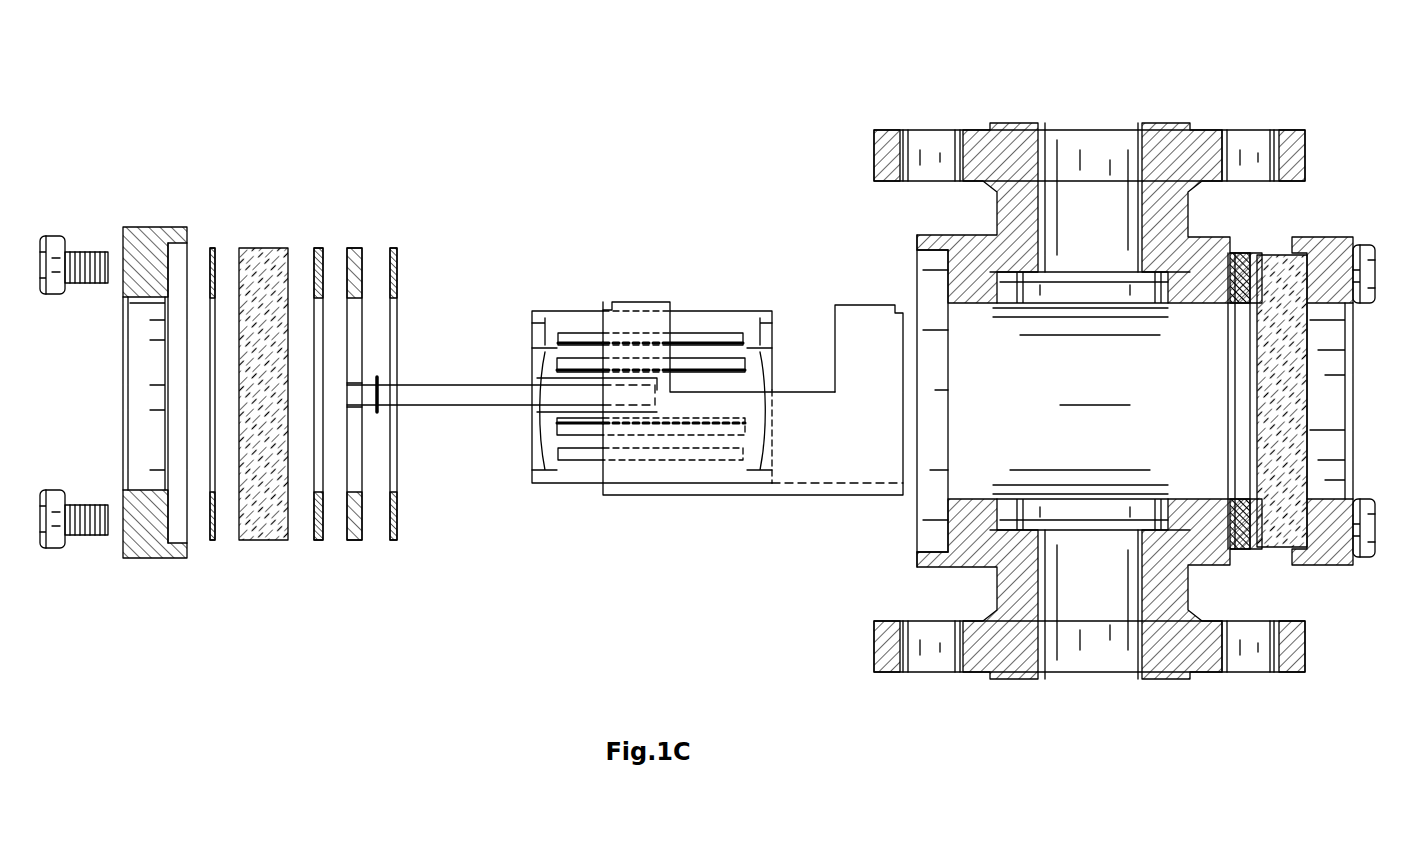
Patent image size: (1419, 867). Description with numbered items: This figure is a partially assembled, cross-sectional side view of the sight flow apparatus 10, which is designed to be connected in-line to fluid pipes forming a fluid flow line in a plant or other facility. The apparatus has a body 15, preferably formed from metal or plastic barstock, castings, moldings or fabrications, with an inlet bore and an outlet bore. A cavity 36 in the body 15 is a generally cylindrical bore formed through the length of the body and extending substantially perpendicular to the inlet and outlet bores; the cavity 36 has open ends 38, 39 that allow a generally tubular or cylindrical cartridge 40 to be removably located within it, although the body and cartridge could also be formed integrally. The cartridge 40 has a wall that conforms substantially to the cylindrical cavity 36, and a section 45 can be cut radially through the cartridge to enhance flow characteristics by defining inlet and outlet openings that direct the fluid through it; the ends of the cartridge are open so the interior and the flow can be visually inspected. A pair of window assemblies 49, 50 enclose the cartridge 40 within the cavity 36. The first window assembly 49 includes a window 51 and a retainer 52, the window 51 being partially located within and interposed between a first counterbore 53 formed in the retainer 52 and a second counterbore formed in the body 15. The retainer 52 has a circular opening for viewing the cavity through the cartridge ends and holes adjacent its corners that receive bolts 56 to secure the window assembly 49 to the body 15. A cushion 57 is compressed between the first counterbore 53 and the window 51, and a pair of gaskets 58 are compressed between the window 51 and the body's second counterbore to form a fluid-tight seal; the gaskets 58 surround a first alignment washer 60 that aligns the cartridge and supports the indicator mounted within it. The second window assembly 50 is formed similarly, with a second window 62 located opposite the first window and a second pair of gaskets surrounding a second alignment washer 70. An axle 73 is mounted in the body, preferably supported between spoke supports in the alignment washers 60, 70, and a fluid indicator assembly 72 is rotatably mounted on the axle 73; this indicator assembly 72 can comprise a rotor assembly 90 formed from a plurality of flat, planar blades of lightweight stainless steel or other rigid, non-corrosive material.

The sight flow apparatus 10 is at (1106, 350).
The body 15 is at (1300, 112).
The cavity 36 is at (1333, 570).
The open end 38 is at (915, 263).
The open end 39 is at (1232, 385).
The cartridge 40 is at (872, 322).
The section 45 is at (835, 332).
The window assembly 49 is at (262, 545).
The window assembly 50 is at (1392, 298).
The window 51 is at (265, 248).
The retainer 52 is at (148, 233).
The first counterbore 53 is at (178, 523).
The bolts 56 is at (42, 250).
The cushion 57 is at (212, 250).
The gaskets 58 is at (320, 248).
The first alignment washer 60 is at (353, 545).
The second window 62 is at (1288, 446).
The second alignment washer 70 is at (1246, 563).
The fluid indicator assembly 72 is at (600, 299).
The axle 73 is at (430, 405).
The rotor assembly 90 is at (526, 304).